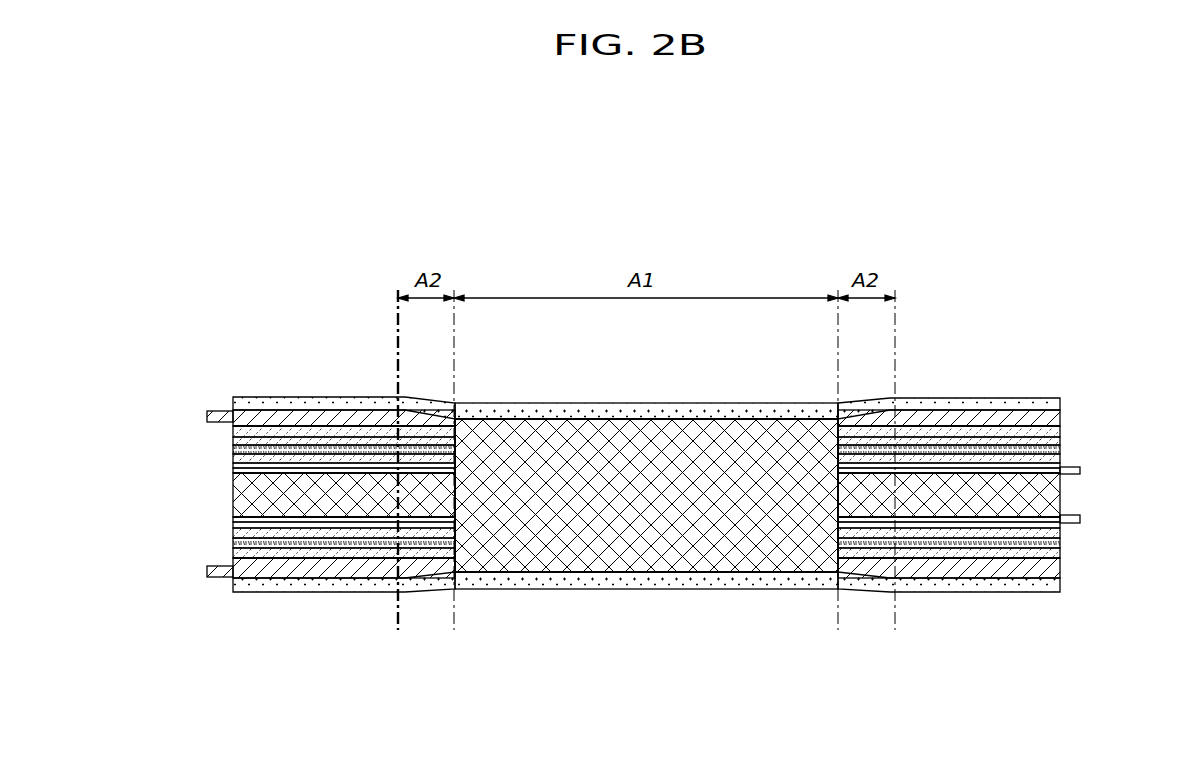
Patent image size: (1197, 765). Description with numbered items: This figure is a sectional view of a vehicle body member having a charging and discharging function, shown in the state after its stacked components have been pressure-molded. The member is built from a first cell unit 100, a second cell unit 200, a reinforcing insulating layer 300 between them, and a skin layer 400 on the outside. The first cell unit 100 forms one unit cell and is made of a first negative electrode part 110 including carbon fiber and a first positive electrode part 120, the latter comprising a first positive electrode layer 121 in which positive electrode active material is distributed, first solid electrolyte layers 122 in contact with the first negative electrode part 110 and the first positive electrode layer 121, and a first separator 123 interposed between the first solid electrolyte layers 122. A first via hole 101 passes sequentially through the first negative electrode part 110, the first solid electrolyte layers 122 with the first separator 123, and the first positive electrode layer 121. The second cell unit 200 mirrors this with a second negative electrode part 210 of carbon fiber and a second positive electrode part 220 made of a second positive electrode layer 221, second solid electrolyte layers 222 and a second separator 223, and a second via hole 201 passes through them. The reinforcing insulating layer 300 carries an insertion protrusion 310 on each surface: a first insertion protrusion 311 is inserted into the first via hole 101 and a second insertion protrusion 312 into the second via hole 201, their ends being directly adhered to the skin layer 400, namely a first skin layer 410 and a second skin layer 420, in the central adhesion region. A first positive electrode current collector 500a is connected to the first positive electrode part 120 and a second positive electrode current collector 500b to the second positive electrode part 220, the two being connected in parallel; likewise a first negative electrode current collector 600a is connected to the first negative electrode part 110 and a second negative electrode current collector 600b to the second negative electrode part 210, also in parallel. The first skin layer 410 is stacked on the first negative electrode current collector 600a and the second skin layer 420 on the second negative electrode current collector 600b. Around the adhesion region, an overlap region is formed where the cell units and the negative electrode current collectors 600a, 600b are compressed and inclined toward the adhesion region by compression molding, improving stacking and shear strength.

The first cell unit 100 is at (1065, 422).
The first negative electrode part 110 is at (266, 411).
The first positive electrode part 120 is at (108, 423).
The first positive electrode layer 121 is at (233, 466).
The first solid electrolyte layer 122 is at (233, 432).
The first separator 123 is at (233, 446).
The first via hole 101 is at (581, 445).
The second cell unit 200 is at (1065, 520).
The second negative electrode part 210 is at (255, 578).
The second positive electrode part 220 is at (108, 518).
The second positive electrode layer 221 is at (233, 525).
The second solid electrolyte layer 222 is at (233, 533).
The second separator 223 is at (233, 543).
The second via hole 201 is at (581, 548).
The reinforcing insulating layer 300 is at (380, 470).
The insertion protrusion 310 is at (794, 529).
The first insertion protrusion 311 is at (760, 435).
The second insertion protrusion 312 is at (760, 548).
The skin layer 400 is at (683, 536).
The first skin layer 410 is at (993, 398).
The second skin layer 420 is at (323, 592).
The first positive electrode current collector 500a is at (1082, 470).
The second positive electrode current collector 500b is at (1082, 519).
The first negative electrode current collector 600a is at (318, 410).
The second negative electrode current collector 600b is at (220, 578).